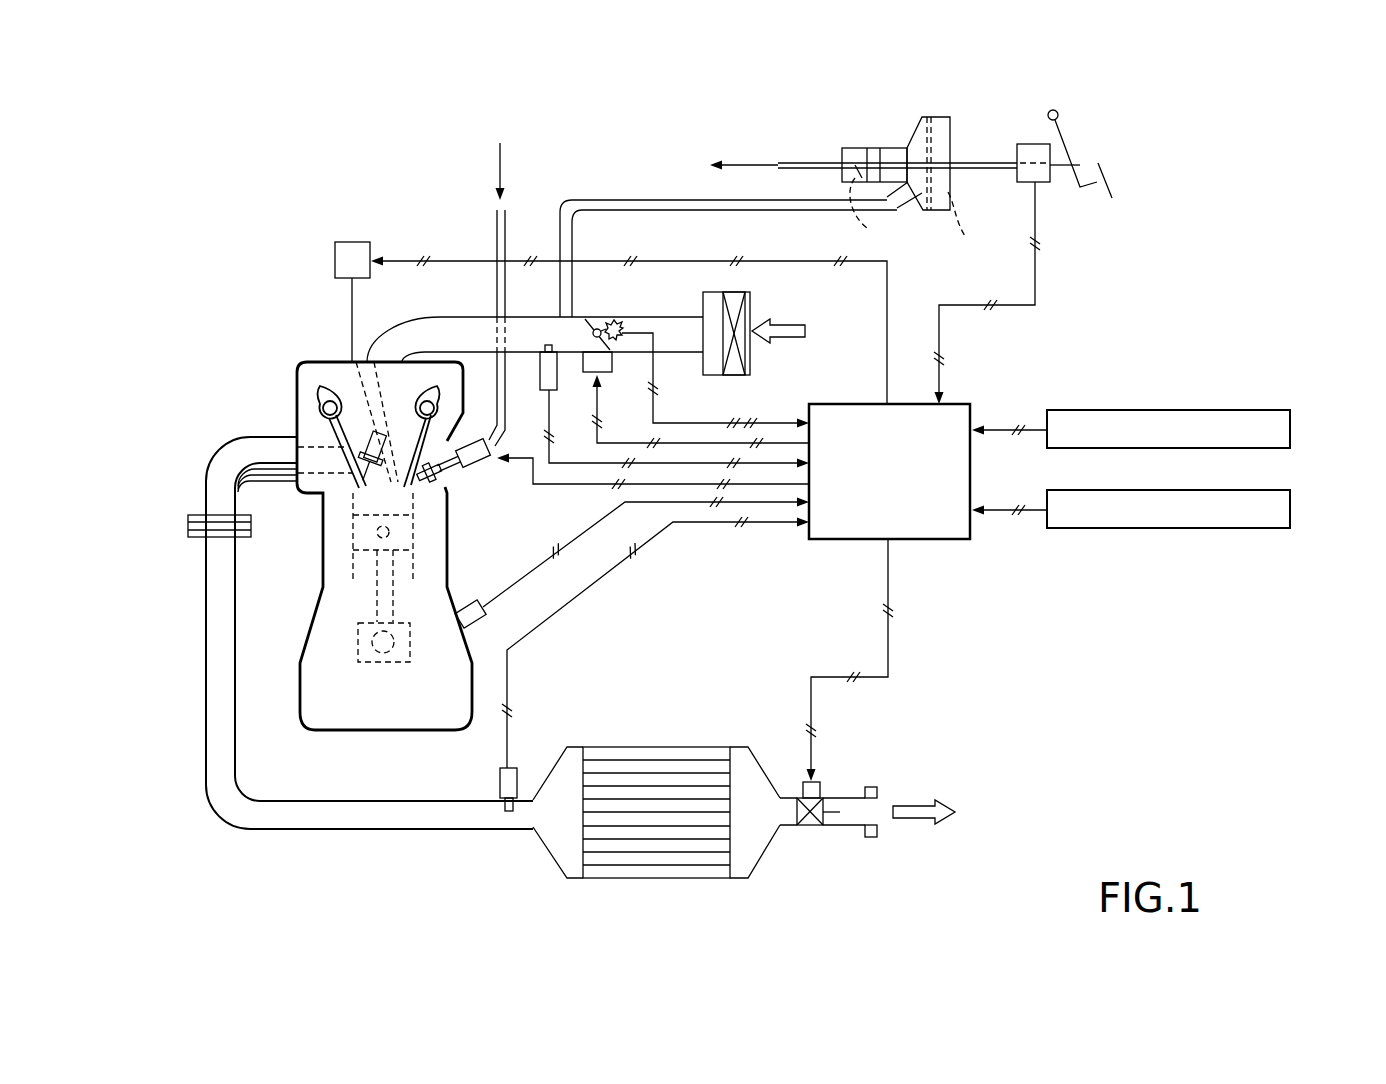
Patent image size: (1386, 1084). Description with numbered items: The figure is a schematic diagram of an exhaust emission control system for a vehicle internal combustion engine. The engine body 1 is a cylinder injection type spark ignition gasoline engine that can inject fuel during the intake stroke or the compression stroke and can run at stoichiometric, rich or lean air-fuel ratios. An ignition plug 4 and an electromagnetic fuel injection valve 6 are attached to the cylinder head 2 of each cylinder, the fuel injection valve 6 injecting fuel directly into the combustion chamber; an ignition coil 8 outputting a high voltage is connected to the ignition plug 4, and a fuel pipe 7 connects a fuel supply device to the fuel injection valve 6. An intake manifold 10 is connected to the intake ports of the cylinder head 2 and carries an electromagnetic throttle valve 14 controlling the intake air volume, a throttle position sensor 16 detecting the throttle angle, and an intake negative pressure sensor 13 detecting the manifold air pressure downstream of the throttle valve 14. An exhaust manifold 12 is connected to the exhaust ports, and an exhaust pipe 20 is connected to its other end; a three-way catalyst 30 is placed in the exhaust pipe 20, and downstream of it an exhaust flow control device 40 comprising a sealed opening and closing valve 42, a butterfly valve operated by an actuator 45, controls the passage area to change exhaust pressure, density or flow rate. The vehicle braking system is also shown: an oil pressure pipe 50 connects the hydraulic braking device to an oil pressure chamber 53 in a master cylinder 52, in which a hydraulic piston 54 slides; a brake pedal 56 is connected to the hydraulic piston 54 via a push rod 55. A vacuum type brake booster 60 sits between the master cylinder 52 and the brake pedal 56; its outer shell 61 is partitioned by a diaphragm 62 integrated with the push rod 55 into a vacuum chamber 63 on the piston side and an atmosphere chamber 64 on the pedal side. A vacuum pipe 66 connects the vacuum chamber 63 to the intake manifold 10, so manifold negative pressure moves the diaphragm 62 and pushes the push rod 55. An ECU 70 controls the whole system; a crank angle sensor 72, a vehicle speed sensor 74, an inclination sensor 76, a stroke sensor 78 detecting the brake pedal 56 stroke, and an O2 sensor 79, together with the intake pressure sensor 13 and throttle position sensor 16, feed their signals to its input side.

The engine body 1 is at (290, 356).
The cylinder head 2 is at (333, 362).
The ignition plug 4 is at (360, 447).
The fuel injection valve 6 is at (468, 478).
The fuel pipe 7 is at (493, 233).
The ignition coil 8 is at (352, 242).
The intake manifold 10 is at (443, 317).
The exhaust manifold 12 is at (220, 452).
The intake negative pressure sensor 13 is at (540, 395).
The electromagnetic throttle valve 14 is at (598, 312).
The throttle position sensor 16 is at (614, 372).
The exhaust pipe 20 is at (352, 830).
The three-way catalyst 30 is at (653, 735).
The exhaust flow control device 40 is at (807, 838).
The sealed opening and closing valve 42 is at (826, 812).
The actuator 45 is at (800, 785).
The oil pressure pipe 50 is at (800, 162).
The master cylinder 52 is at (888, 135).
The oil pressure chamber 53 is at (848, 160).
The hydraulic piston 54 is at (856, 217).
The push rod 55 is at (985, 162).
The brake pedal 56 is at (1116, 154).
The vacuum type brake booster 60 is at (937, 103).
The outer shell 61 is at (955, 183).
The diaphragm 62 is at (965, 236).
The vacuum chamber 63 is at (920, 210).
The atmosphere chamber 64 is at (948, 136).
The vacuum pipe 66 is at (713, 212).
The ECU 70 is at (943, 541).
The crank angle sensor 72 is at (480, 600).
The vehicle speed sensor 74 is at (1290, 420).
The inclination sensor 76 is at (1290, 500).
The stroke sensor 78 is at (1005, 293).
The O2 sensor 79 is at (497, 790).